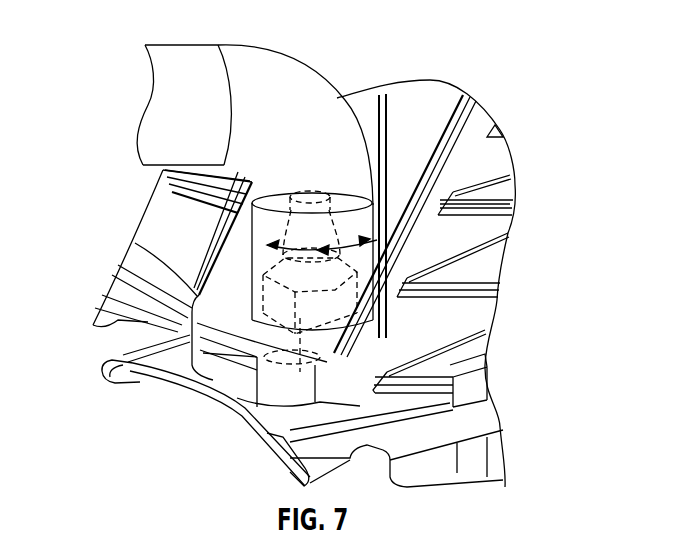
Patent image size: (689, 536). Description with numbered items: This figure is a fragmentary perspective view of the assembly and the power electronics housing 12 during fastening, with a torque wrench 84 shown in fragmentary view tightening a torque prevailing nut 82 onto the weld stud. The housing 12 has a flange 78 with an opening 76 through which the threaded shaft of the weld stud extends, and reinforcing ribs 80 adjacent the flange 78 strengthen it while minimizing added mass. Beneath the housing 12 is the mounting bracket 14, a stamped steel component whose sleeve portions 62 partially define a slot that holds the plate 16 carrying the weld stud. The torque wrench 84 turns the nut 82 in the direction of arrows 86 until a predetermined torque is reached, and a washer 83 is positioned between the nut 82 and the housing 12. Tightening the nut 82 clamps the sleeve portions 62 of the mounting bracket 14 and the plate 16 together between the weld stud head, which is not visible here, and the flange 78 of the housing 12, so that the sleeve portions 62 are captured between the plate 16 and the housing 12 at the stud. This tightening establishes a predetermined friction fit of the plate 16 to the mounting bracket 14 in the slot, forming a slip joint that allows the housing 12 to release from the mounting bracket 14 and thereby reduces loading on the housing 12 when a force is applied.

The power electronics housing 12 is at (423, 283).
The mounting bracket 14 is at (165, 325).
The plate 16 is at (206, 423).
The sleeve portions 62 is at (185, 385).
The opening 76 is at (303, 365).
The flange 78 is at (177, 384).
The reinforcing ribs 80 is at (334, 230).
The torque prevailing nut 82 is at (262, 281).
The washer 83 is at (135, 262).
The torque wrench 84 is at (255, 172).
The arrows 86 is at (353, 252).